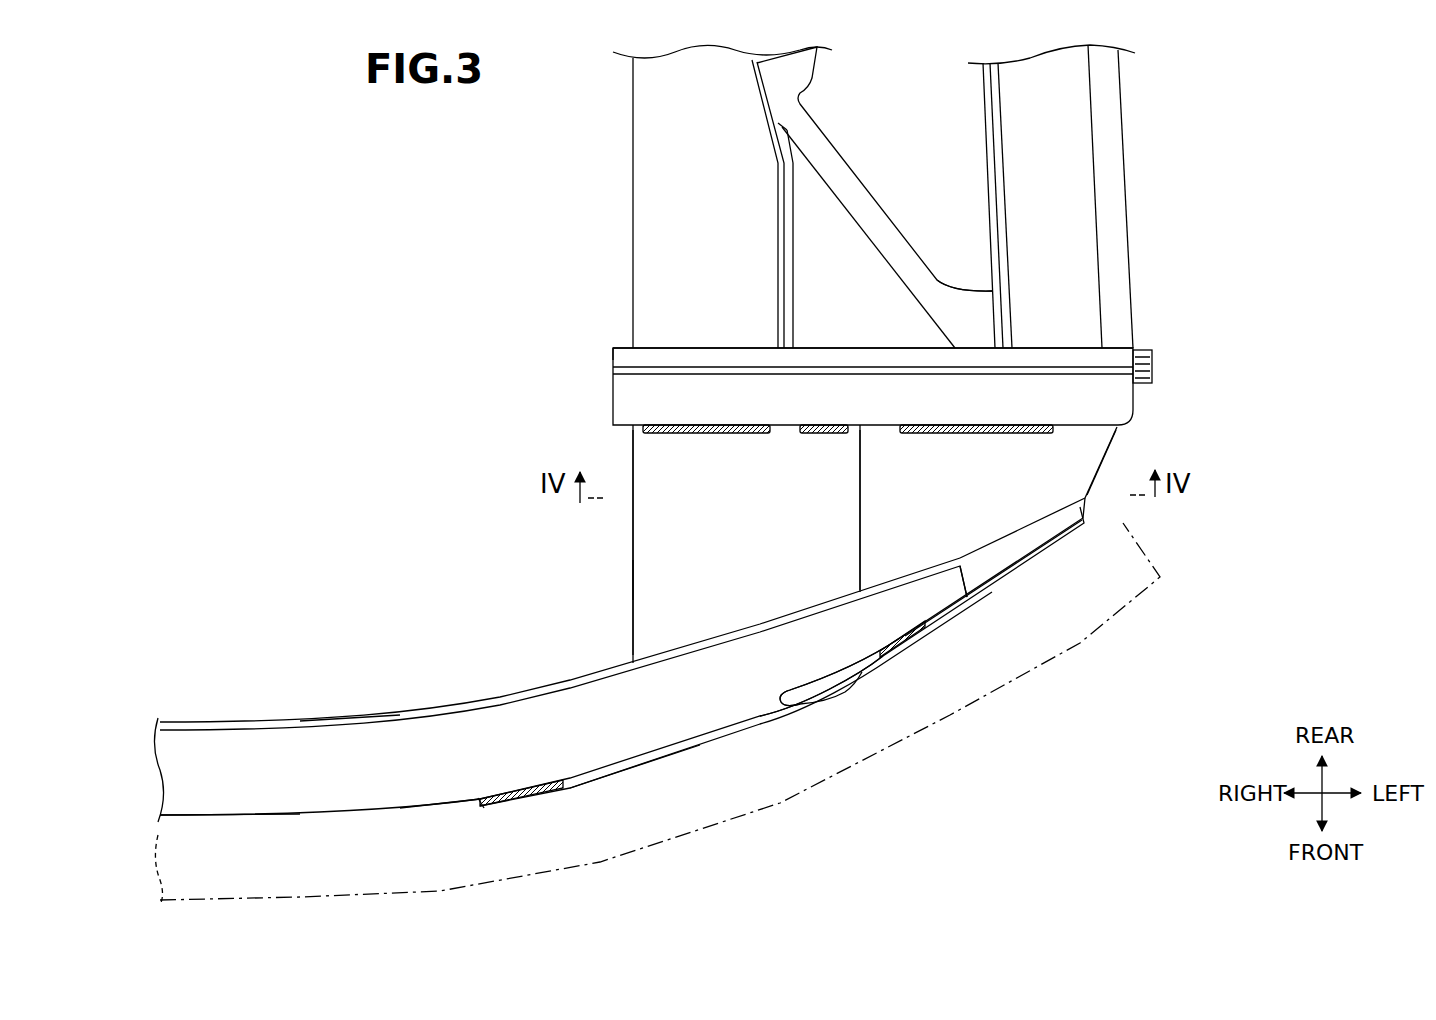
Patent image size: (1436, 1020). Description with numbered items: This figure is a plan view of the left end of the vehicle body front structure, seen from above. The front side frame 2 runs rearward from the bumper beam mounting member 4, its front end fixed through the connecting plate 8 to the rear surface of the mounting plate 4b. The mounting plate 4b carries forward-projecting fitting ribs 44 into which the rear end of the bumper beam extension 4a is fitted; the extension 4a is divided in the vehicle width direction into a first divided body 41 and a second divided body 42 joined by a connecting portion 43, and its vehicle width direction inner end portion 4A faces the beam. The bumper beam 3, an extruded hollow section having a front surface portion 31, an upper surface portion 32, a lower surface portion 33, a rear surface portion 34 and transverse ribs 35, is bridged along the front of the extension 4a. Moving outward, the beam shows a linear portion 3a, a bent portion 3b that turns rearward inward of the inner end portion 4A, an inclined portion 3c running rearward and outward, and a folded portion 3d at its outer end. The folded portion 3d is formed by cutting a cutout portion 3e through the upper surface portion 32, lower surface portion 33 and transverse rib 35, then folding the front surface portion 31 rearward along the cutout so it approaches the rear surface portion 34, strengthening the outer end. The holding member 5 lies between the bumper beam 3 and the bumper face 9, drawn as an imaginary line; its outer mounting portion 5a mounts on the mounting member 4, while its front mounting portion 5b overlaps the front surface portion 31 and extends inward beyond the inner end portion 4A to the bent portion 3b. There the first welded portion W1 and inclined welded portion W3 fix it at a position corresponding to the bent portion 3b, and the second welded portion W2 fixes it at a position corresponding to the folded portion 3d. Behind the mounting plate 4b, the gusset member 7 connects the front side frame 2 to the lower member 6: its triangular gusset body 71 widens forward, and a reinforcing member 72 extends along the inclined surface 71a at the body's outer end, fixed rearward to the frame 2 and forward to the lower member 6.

The front side frame 2 is at (685, 165).
The bumper beam 3 is at (654, 725).
The linear portion 3a is at (248, 815).
The bent portion 3b is at (483, 763).
The inclined portion 3c is at (693, 693).
The folded portion 3d is at (860, 678).
The cutout portion 3e is at (873, 635).
The front surface portion 31 is at (437, 805).
The upper surface portion 32 is at (947, 635).
The lower surface portion 33 is at (953, 583).
The rear surface portion 34 is at (524, 697).
The transverse rib 35 is at (1030, 604).
The bumper beam mounting member 4 is at (853, 494).
The bumper beam extension 4a is at (852, 538).
The mounting plate 4b is at (640, 398).
The vehicle width direction inner end portion 4A is at (632, 584).
The first divided body 41 is at (680, 535).
The second divided body 42 is at (1080, 467).
The connecting portion 43 is at (862, 548).
The fitting rib 44 is at (613, 355).
The holding member 5 is at (736, 743).
The outer mounting portion 5a is at (1148, 385).
The front mounting portion 5b is at (627, 773).
The lower member 6 is at (1068, 192).
The gusset member 7 is at (872, 197).
The gusset body 71 is at (828, 237).
The reinforcing member 72 is at (874, 197).
The inclined surface 71a is at (912, 247).
The connecting plate 8 is at (680, 358).
The bumper face 9 is at (307, 900).
The first welded portion W1 is at (542, 797).
The second welded portion W2 is at (903, 653).
The inclined welded portion W3 is at (481, 803).